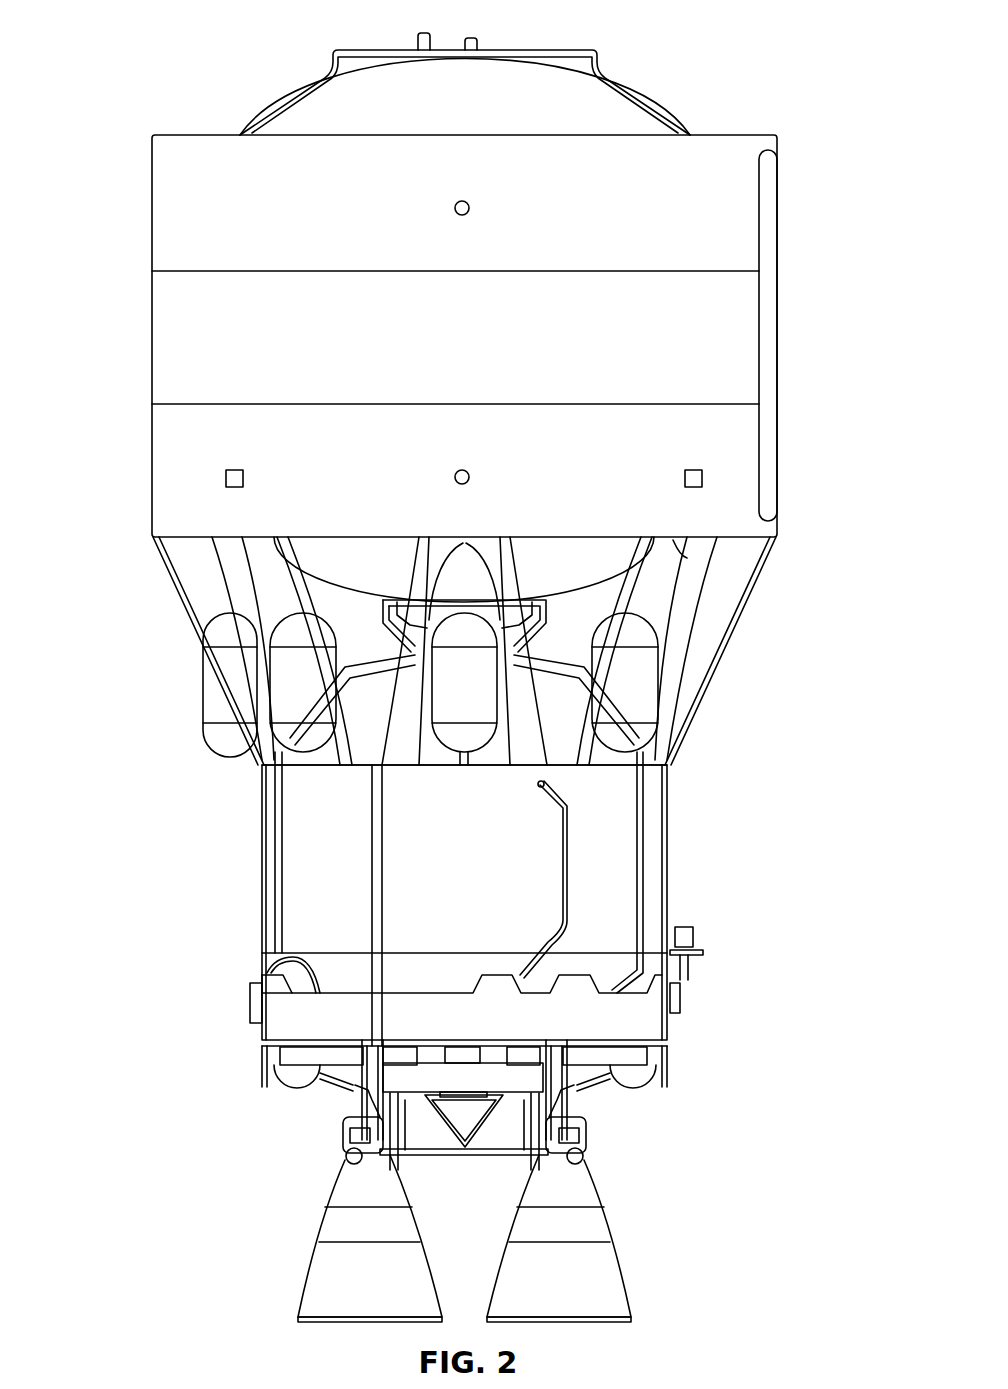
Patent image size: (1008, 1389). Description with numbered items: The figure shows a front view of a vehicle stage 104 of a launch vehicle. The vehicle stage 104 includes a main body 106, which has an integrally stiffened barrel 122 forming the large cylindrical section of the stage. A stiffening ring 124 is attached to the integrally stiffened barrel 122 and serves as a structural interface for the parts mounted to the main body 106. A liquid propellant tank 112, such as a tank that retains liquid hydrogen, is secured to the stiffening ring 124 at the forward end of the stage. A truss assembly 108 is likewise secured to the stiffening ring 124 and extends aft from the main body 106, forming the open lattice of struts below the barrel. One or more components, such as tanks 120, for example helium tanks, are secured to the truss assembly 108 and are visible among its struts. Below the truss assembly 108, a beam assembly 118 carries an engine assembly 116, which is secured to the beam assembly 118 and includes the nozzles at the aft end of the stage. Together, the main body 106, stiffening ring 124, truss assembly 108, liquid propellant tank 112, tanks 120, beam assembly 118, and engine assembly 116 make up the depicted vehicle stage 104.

The vehicle stage 104 is at (131, 41).
The main body 106 is at (522, 336).
The truss assembly 108 is at (502, 651).
The liquid propellant tank 112 is at (622, 113).
The engine assembly 116 is at (617, 1232).
The beam assembly 118 is at (645, 1027).
The tanks 120 is at (207, 707).
The integrally stiffened barrel 122 is at (740, 468).
The stiffening ring 124 is at (728, 540).